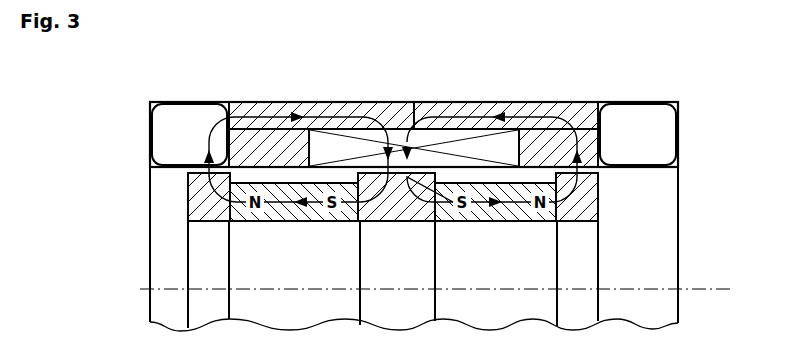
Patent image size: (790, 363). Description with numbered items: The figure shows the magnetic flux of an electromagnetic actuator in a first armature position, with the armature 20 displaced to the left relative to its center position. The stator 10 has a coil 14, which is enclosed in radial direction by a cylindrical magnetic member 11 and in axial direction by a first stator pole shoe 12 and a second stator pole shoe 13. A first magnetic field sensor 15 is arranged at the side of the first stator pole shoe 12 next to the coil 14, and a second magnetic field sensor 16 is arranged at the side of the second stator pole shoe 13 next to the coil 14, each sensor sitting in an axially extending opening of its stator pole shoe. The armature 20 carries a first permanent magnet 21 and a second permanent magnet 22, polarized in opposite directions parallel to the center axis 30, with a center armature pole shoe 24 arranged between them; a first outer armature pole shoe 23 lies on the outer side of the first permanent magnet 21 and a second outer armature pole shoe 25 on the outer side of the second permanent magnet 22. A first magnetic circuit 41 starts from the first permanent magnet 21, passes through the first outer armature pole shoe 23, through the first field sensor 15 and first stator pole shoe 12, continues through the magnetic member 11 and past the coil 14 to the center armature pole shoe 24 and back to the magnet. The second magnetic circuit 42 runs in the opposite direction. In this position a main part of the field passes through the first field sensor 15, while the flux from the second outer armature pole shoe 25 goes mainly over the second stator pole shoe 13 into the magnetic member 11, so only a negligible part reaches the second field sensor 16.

The stator 10 is at (698, 141).
The magnetic member 11 is at (400, 120).
The first stator pole shoe 12 is at (273, 140).
The second stator pole shoe 13 is at (562, 143).
The coil 14 is at (482, 152).
The first magnetic field sensor 15 is at (192, 132).
The second magnetic field sensor 16 is at (642, 132).
The armature 20 is at (650, 248).
The first permanent magnet 21 is at (298, 207).
The second permanent magnet 22 is at (503, 210).
The first outer armature pole shoe 23 is at (210, 210).
The center armature pole shoe 24 is at (400, 208).
The second outer armature pole shoe 25 is at (580, 210).
The axis 30 is at (722, 291).
The first magnetic circuit 41 is at (340, 113).
The second magnetic circuit 42 is at (448, 113).